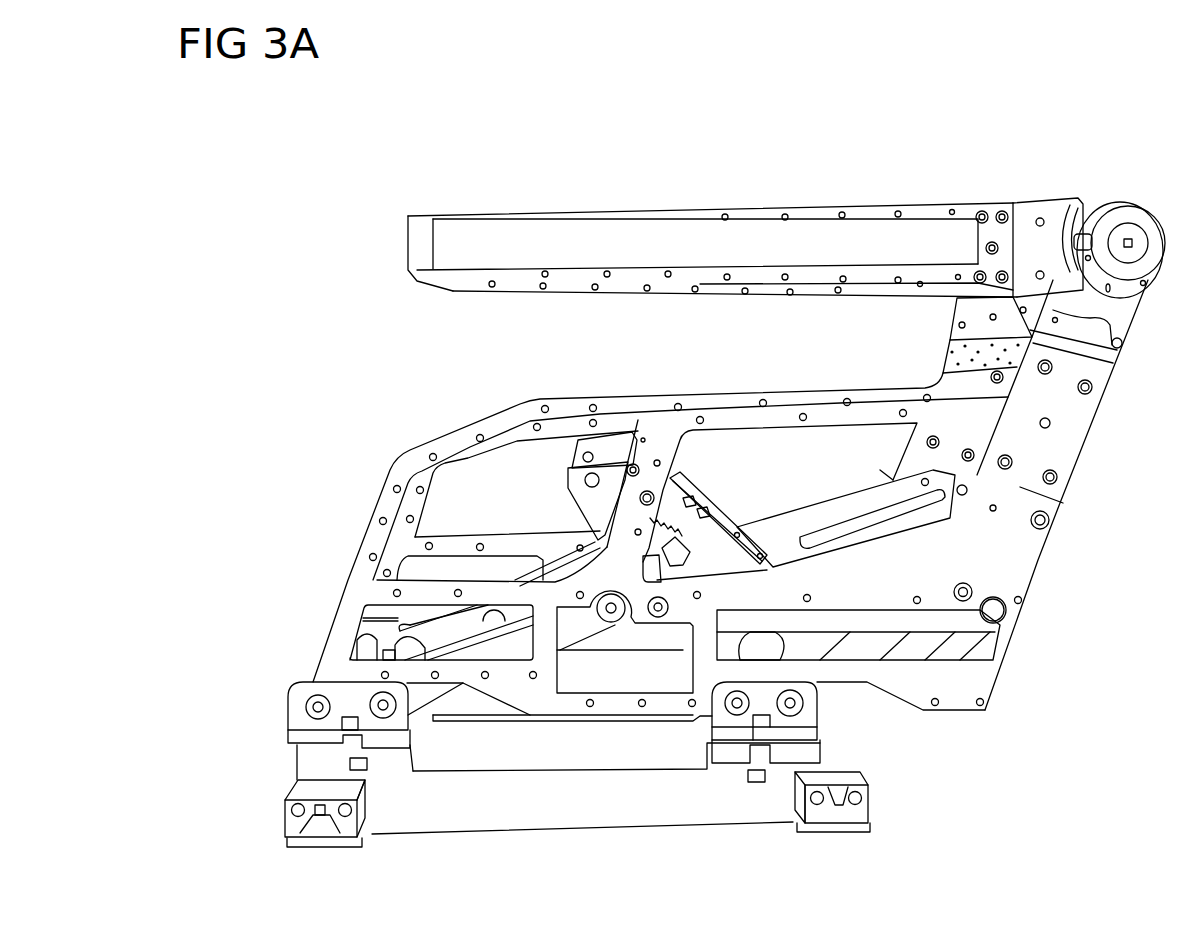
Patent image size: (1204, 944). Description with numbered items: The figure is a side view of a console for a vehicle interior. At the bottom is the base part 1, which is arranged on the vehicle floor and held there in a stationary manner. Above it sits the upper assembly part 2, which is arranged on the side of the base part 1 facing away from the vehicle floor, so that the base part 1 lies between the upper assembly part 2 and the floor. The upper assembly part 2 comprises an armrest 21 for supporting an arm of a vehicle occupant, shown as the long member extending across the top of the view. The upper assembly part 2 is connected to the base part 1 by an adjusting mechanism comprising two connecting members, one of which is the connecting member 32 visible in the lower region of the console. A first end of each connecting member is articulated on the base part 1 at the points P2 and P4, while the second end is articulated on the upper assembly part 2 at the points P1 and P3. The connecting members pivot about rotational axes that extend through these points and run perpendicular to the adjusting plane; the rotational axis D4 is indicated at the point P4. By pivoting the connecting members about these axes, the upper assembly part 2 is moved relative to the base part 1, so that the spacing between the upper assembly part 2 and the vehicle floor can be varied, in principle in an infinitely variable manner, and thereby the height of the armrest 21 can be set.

The armrest 21 is at (703, 205).
The upper assembly part 2 is at (1070, 437).
The connecting member 32 is at (500, 650).
The rotational axis D4 is at (410, 650).
The articulation point P4 is at (382, 703).
The articulation point P3 is at (608, 605).
The articulation point P2 is at (792, 705).
The articulation point P1 is at (992, 610).
The base part 1 is at (703, 807).